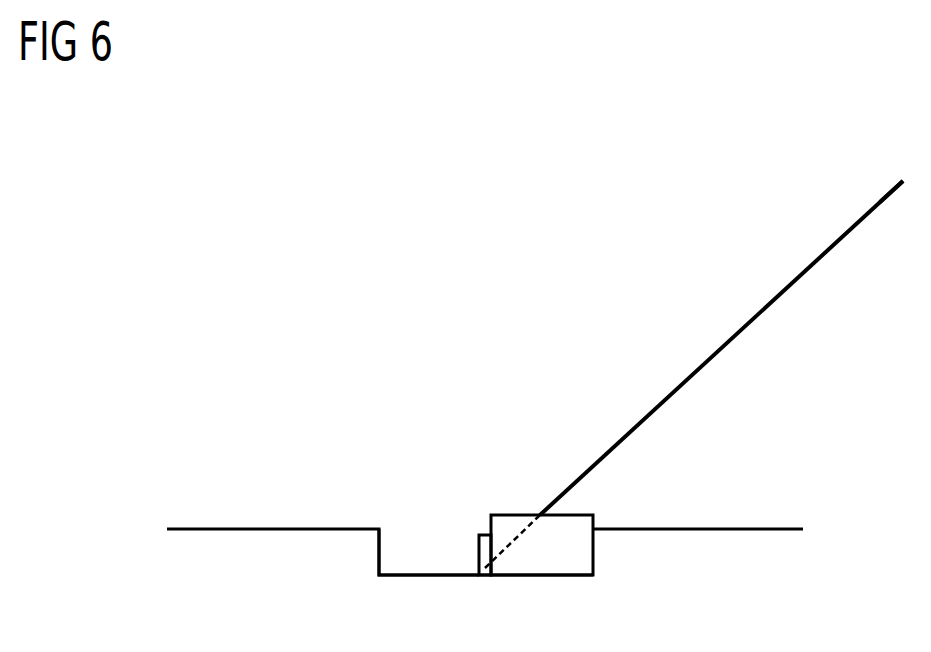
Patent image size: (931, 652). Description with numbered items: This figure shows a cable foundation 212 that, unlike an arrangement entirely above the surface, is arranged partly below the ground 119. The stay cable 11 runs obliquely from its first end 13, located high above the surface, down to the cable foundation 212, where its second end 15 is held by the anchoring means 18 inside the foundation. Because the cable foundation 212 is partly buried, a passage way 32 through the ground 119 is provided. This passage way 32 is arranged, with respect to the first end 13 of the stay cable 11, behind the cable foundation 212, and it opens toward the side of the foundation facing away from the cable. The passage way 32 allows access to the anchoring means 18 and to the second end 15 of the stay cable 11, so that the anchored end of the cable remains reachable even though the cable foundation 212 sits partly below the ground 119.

The stay cable 11 is at (720, 351).
The first end of the stay cable 13 is at (893, 181).
The second end of the stay cable 15 is at (478, 533).
The anchoring means 18 is at (485, 567).
The passage way 32 is at (406, 521).
The ground 119 is at (710, 528).
The cable foundation 212 is at (510, 515).